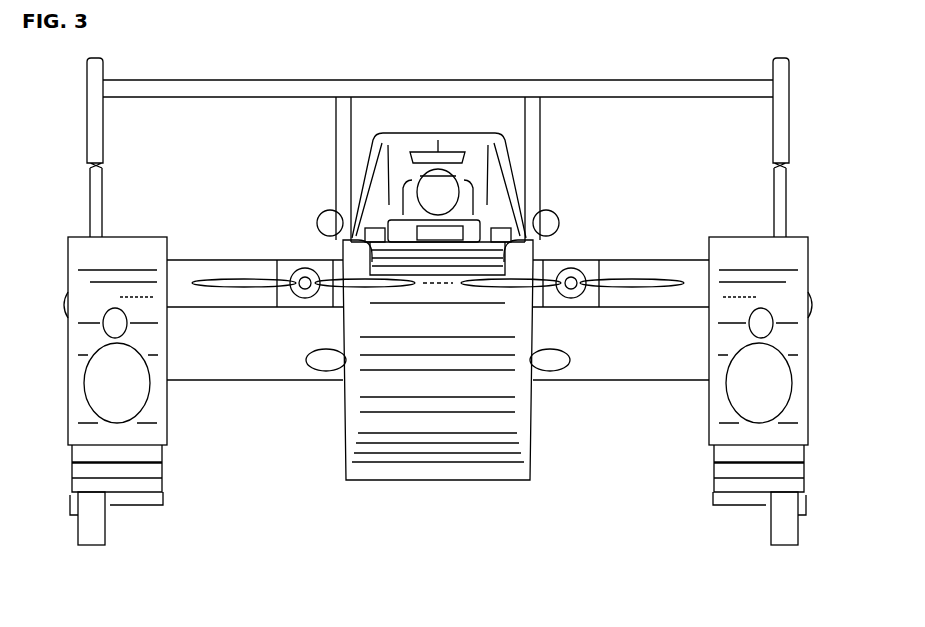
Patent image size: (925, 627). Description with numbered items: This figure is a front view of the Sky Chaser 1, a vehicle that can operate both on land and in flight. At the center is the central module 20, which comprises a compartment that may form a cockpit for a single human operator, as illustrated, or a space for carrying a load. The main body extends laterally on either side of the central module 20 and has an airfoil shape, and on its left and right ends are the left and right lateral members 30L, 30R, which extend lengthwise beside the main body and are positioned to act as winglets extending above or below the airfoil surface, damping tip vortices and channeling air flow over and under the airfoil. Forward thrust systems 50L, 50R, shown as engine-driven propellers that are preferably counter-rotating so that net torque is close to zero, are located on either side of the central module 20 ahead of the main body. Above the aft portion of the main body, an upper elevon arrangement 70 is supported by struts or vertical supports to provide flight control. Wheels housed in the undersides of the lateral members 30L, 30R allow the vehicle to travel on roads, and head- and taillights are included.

The Sky Chaser 1 is at (818, 98).
The central module 20 is at (435, 382).
The right lateral member 30R is at (141, 379).
The left lateral member 30L is at (733, 384).
The right thrust system 50R is at (277, 283).
The left thrust system 50L is at (645, 278).
The upper elevon arrangement 70 is at (428, 79).